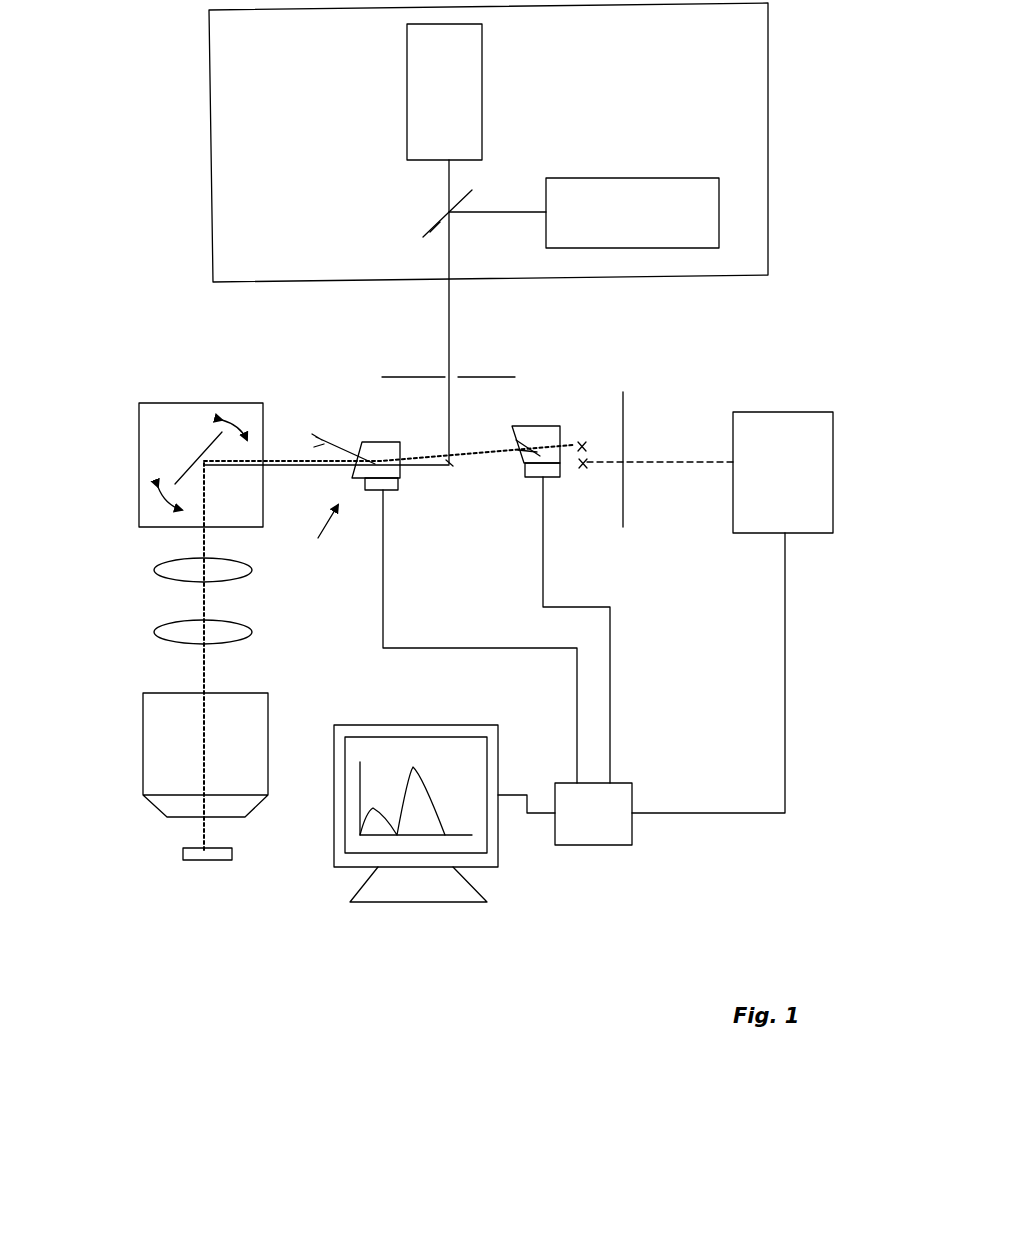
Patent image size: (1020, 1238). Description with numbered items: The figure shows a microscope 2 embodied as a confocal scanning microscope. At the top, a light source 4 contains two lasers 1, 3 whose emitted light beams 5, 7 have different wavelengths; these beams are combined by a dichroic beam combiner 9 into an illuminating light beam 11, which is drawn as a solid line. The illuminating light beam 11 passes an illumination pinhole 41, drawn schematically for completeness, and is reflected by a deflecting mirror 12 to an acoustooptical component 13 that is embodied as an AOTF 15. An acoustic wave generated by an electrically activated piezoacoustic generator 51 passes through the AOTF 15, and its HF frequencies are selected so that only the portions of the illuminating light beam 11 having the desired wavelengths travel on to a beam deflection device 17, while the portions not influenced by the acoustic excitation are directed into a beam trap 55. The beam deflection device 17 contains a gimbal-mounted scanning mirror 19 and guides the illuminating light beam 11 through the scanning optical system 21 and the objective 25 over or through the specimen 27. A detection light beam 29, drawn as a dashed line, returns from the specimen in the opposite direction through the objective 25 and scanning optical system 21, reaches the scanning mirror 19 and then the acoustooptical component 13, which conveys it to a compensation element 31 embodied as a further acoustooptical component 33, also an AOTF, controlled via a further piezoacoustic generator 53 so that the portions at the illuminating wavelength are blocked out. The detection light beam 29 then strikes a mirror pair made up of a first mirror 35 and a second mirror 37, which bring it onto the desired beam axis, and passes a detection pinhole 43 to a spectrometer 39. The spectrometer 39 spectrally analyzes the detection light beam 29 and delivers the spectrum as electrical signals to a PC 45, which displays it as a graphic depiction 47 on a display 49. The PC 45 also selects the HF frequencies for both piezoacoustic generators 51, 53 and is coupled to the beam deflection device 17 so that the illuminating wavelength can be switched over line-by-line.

The laser 1 is at (468, 68).
The microscope 2 is at (212, 1012).
The laser 3 is at (643, 217).
The light source 4 is at (223, 145).
The emitted light beam 5 is at (447, 198).
The emitted light beam 7 is at (493, 213).
The dichroic beam combiner 9 is at (433, 233).
The illuminating light beam 11 is at (449, 352).
The deflecting mirror 12 is at (455, 463).
The acoustooptical component 13 is at (311, 542).
The AOTF 15 is at (393, 470).
The beam deflection device 17 is at (160, 417).
The scanning mirror 19 is at (185, 462).
The scanning optical system 21 is at (177, 633).
The objective 25 is at (168, 722).
The specimen 27 is at (197, 852).
The detection light beam 29 is at (472, 450).
The compensation element 31 is at (543, 413).
The further acoustooptical component 33 is at (537, 452).
The first mirror 35 is at (582, 445).
The second mirror 37 is at (583, 463).
The spectrometer 39 is at (783, 435).
The illumination pinhole 41 is at (397, 393).
The detection pinhole 43 is at (623, 415).
The PC 45 is at (578, 820).
The graphic depiction 47 is at (368, 787).
The display 49 is at (407, 725).
The piezoacoustic generator 51 is at (373, 485).
The further piezoacoustic generator 53 is at (527, 480).
The beam trap 55 is at (317, 443).